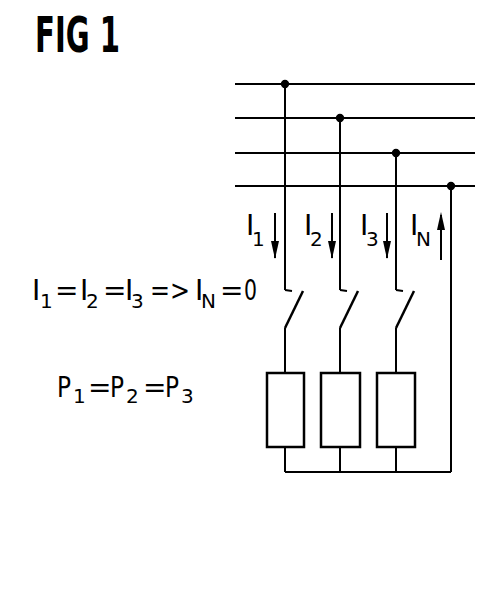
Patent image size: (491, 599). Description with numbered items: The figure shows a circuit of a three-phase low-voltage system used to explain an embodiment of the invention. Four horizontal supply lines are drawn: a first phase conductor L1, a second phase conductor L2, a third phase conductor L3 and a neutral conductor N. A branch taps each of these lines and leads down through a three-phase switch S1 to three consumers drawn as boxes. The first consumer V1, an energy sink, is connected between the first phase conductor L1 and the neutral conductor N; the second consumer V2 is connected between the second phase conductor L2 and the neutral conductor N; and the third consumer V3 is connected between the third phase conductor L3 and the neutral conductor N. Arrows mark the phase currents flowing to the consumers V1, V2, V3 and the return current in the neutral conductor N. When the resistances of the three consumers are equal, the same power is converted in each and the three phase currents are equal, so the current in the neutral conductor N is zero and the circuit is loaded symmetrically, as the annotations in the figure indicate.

The first phase conductor L1 is at (340, 85).
The second phase conductor L2 is at (340, 119).
The third phase conductor L3 is at (340, 154).
The neutral conductor N is at (344, 322).
The three-phase switch S1 is at (277, 313).
The first consumer V1 is at (270, 493).
The second consumer V2 is at (328, 493).
The third consumer V3 is at (387, 493).